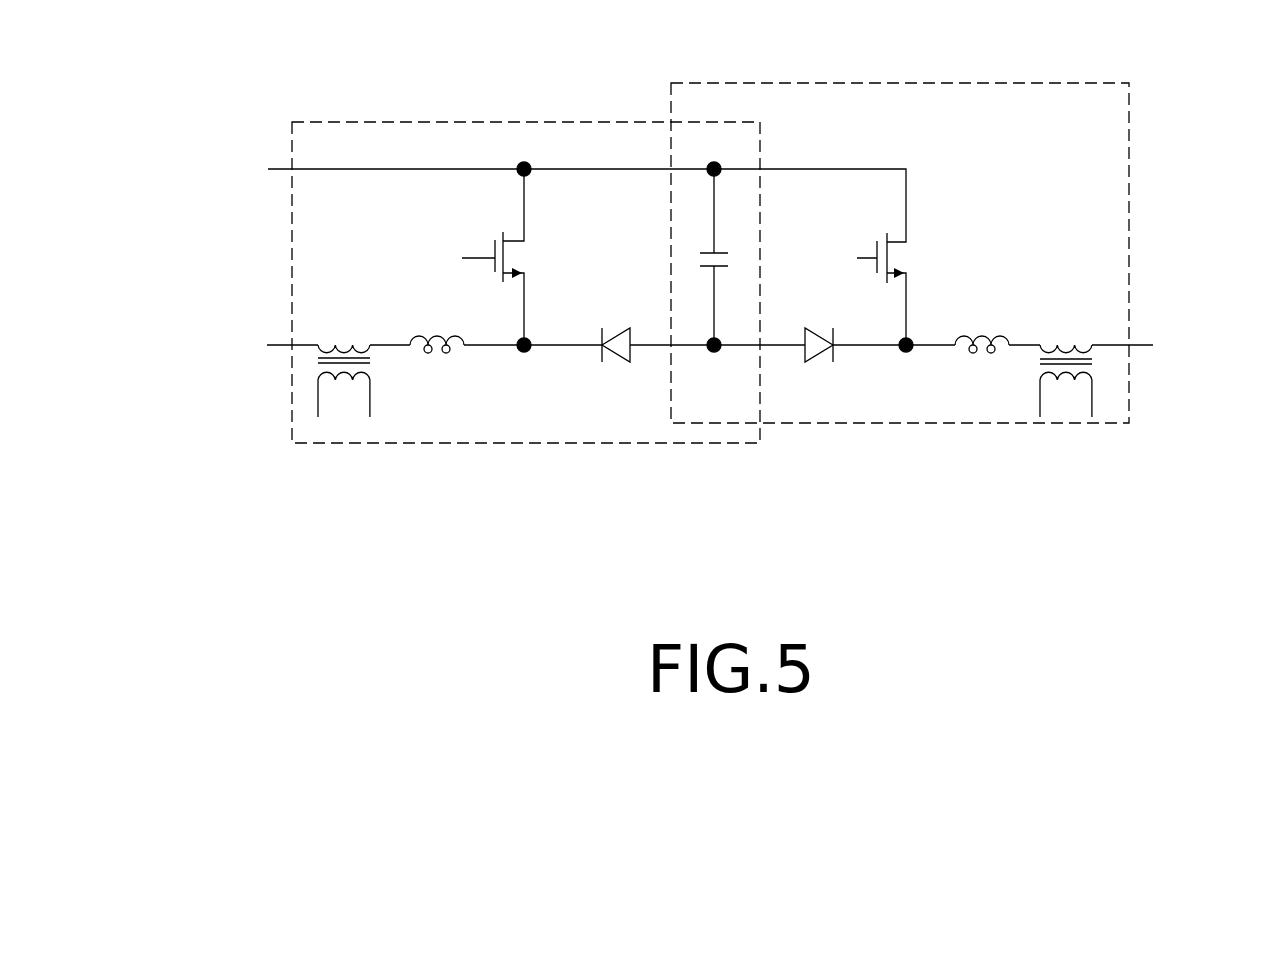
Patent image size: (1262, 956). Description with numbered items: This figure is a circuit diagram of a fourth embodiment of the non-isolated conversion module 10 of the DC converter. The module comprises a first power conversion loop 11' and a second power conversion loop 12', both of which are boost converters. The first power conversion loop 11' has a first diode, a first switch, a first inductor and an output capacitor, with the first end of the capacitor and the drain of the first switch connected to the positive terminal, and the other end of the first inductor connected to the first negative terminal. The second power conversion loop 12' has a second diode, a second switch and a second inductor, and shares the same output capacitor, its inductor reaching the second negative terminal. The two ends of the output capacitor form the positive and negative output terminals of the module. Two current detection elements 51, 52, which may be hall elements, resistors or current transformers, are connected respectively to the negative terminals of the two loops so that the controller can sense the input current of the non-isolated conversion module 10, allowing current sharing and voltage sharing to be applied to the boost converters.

The non-isolated conversion module 10 is at (444, 98).
The first power conversion loop 11' is at (526, 315).
The second power conversion loop 12' is at (950, 253).
The current detection element 51 is at (344, 360).
The current detection element 52 is at (1066, 362).